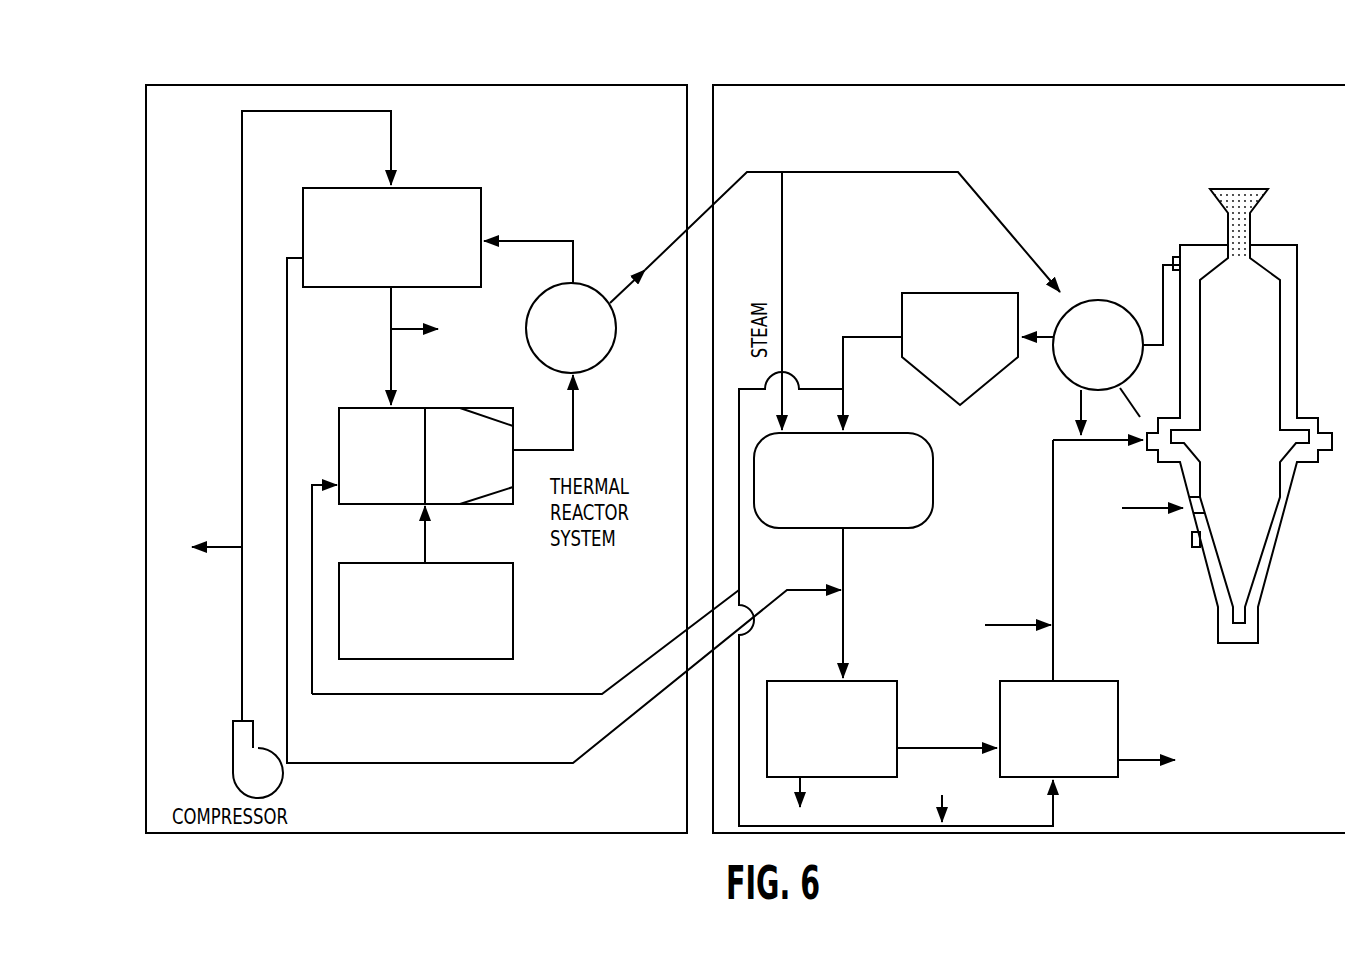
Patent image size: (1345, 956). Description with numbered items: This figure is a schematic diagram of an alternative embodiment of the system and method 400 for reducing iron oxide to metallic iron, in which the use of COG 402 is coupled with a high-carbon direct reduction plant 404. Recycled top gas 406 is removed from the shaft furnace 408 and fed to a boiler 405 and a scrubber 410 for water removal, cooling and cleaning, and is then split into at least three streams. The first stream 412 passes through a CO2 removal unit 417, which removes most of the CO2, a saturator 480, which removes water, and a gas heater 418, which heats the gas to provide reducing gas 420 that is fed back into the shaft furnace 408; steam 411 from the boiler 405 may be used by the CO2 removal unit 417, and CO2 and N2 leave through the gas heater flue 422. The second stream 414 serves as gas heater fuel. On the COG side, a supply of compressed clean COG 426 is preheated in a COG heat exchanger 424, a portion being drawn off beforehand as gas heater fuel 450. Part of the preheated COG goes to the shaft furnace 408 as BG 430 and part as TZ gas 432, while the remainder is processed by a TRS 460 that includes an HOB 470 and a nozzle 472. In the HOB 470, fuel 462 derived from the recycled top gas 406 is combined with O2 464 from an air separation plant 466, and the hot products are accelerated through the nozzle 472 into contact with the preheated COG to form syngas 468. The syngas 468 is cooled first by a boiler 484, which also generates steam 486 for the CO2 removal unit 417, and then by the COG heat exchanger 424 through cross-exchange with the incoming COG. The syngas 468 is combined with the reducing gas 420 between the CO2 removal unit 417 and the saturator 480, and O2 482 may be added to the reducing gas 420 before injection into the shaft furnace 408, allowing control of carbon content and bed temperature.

The system and method for reducing iron oxide to metallic iron using COG 400 is at (822, 46).
The use of COG 402 is at (232, 85).
The high-carbon direct reduction plant 404 is at (1268, 85).
The boiler 405 is at (1093, 302).
The recycled top gas 406 is at (1030, 344).
The shaft furnace 408 is at (1266, 245).
The scrubber 410 is at (935, 293).
The steam 411 is at (998, 210).
The first stream 412 is at (845, 405).
The second stream 414 is at (740, 577).
The CO2 removal unit 417 is at (933, 475).
The gas heater 418 is at (1090, 681).
The reducing gas 420 is at (1054, 545).
The gas heater flue 422 is at (1237, 756).
The COG heat exchanger 424 is at (435, 188).
The compressed clean COG 426 is at (240, 163).
The BG 430 is at (498, 308).
The TZ gas 432 is at (1150, 510).
The gas heater fuel 450 is at (220, 549).
The TRS 460 is at (444, 408).
The fuel 462 is at (525, 694).
The O2 464 is at (425, 552).
The air separation plant 466 is at (513, 615).
The syngas 468 is at (493, 763).
The HOB 470 is at (373, 406).
The nozzle 472 is at (513, 442).
The saturator 480 is at (873, 681).
The O2 482 is at (975, 625).
The boiler 484 is at (617, 338).
The steam 486 is at (700, 215).